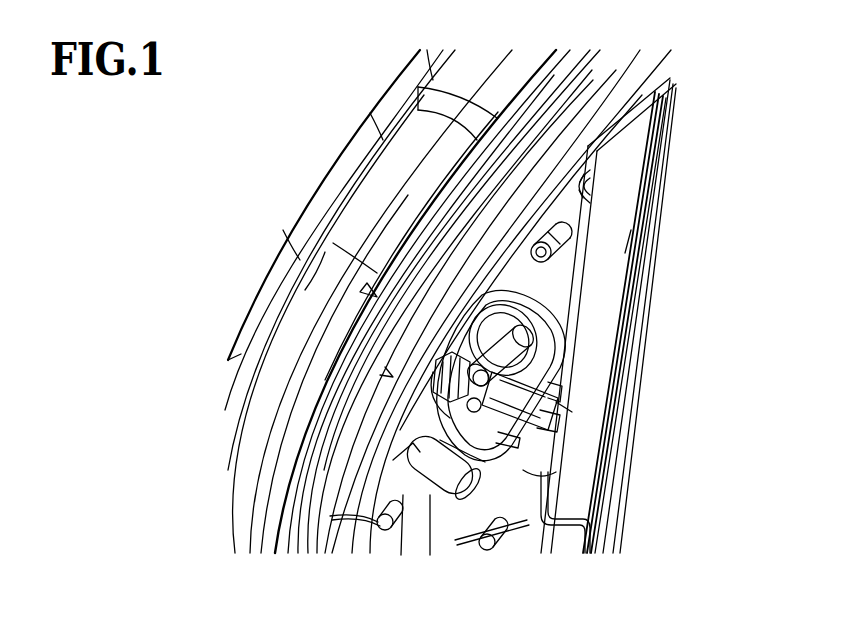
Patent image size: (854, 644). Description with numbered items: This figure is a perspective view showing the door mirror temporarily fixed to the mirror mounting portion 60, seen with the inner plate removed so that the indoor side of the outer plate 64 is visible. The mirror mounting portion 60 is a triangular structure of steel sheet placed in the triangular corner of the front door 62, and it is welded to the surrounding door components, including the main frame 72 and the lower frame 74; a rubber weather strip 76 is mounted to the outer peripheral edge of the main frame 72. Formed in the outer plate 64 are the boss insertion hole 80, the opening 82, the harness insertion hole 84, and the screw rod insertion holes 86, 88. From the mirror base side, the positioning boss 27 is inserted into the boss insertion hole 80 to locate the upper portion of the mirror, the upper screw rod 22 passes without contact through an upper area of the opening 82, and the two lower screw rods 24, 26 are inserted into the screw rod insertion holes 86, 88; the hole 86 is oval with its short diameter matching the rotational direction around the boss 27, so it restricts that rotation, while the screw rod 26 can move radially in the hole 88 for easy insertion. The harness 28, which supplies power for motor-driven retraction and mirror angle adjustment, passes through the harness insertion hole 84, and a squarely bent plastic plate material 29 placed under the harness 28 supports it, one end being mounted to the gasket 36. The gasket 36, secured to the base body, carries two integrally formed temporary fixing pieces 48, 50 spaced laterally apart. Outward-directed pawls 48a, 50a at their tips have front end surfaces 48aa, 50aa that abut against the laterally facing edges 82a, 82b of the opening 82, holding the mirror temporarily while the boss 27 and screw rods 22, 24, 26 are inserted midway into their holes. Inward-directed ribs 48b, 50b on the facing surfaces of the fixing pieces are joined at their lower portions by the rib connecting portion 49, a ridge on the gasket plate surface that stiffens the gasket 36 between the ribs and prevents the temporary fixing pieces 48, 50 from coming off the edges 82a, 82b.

The upper screw rod 22 is at (522, 367).
The lower screw rod 24 is at (387, 530).
The lower screw rod 26 is at (486, 551).
The positioning boss 27 is at (567, 237).
The harness 28 is at (416, 556).
The plate material 29 is at (443, 528).
The gasket 36 is at (528, 380).
The temporary fixing piece 48 is at (515, 356).
The pawl 48a is at (530, 325).
The front end surface 48aa is at (436, 394).
The rib 48b is at (470, 412).
The rib connecting portion 49 is at (468, 428).
The temporary fixing piece 50 is at (545, 393).
The pawl 50a is at (547, 432).
The front end surface 50aa is at (510, 445).
The rib 50b is at (555, 388).
The mirror mounting portion 60 is at (613, 522).
The front door 62 is at (297, 152).
The outer plate 64 is at (548, 491).
The main frame 72 is at (582, 102).
The lower frame 74 is at (660, 194).
The weather strip 76 is at (443, 105).
The boss insertion hole 80 is at (590, 203).
The opening 82 is at (520, 470).
The edge 82a is at (625, 253).
The edge 82b is at (570, 412).
The harness insertion hole 84 is at (590, 548).
The screw rod insertion hole 86 is at (373, 523).
The screw rod insertion hole 88 is at (508, 534).